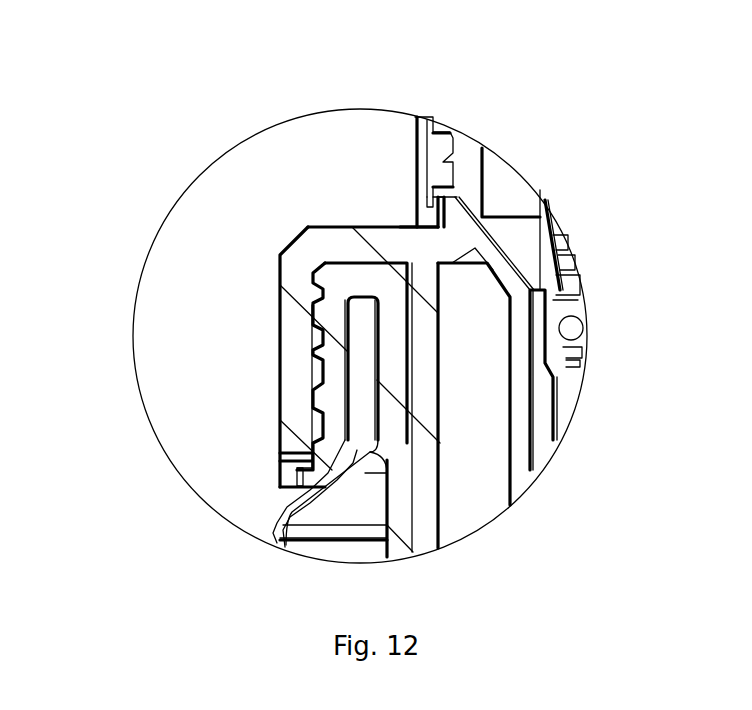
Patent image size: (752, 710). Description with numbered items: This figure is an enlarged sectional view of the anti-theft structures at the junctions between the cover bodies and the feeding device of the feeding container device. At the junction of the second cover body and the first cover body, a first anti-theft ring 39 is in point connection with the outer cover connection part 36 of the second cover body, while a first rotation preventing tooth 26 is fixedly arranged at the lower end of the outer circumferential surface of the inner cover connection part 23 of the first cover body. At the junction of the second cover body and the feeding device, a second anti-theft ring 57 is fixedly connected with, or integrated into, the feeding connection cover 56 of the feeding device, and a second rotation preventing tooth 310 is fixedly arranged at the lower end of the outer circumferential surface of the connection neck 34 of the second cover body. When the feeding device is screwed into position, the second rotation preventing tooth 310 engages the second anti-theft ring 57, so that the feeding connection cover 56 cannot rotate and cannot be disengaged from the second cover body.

The inner cover connection part 23 is at (333, 388).
The first rotation preventing tooth 26 is at (330, 483).
The connection neck 34 is at (468, 162).
The outer cover connection part 36 is at (312, 308).
The first anti-theft ring 39 is at (282, 482).
The feeding connection cover 56 is at (426, 145).
The second anti-theft ring 57 is at (424, 208).
The second rotation preventing tooth 310 is at (435, 215).